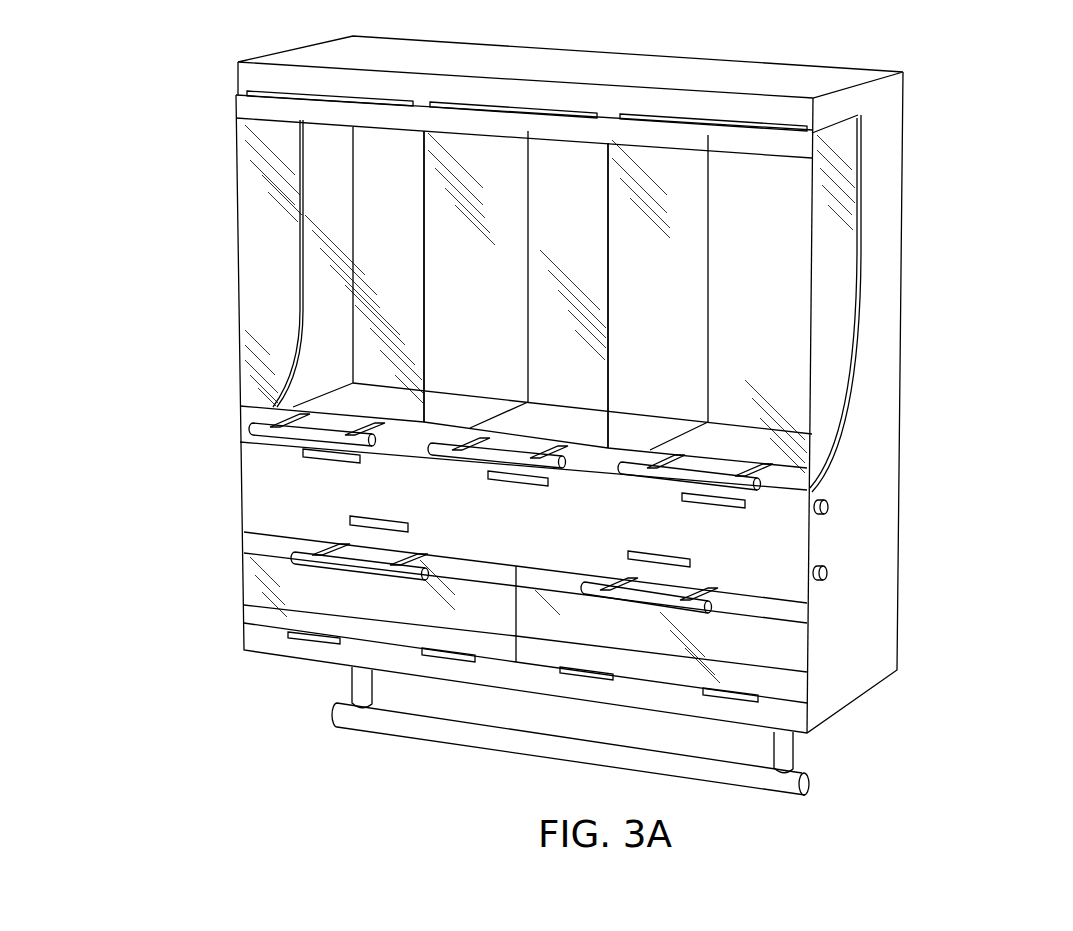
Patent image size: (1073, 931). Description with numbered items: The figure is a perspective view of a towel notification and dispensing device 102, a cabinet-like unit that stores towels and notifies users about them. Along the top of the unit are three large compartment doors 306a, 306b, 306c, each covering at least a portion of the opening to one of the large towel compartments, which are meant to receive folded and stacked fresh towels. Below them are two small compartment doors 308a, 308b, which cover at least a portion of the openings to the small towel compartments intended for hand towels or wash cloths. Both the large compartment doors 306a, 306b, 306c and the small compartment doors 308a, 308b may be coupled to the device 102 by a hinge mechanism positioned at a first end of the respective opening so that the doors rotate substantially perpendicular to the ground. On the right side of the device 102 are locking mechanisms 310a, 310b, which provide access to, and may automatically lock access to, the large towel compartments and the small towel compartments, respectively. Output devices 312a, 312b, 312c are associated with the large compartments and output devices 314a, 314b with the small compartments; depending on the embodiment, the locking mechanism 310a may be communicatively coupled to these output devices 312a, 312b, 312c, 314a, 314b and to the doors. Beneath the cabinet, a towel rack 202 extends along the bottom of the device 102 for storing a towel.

The towel notification and dispensing device 102 is at (962, 113).
The towel rack 202 is at (818, 780).
The large compartment door 306a is at (372, 138).
The large compartment door 306b is at (571, 151).
The large compartment door 306c is at (765, 163).
The small compartment door 308a is at (237, 572).
The small compartment door 308b is at (803, 673).
The locking mechanism 310a is at (833, 505).
The locking mechanism 310b is at (835, 572).
The output device 312a is at (298, 452).
The output device 312b is at (481, 476).
The output device 312c is at (678, 498).
The output device 314a is at (413, 528).
The output device 314b is at (695, 565).